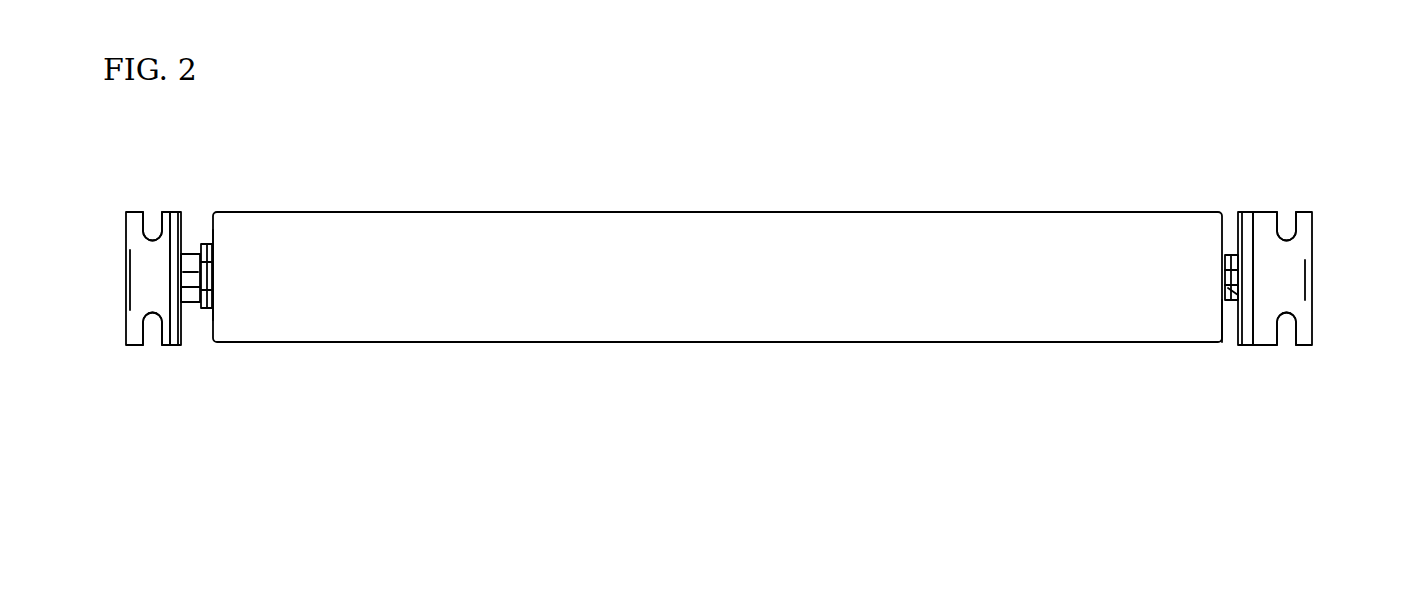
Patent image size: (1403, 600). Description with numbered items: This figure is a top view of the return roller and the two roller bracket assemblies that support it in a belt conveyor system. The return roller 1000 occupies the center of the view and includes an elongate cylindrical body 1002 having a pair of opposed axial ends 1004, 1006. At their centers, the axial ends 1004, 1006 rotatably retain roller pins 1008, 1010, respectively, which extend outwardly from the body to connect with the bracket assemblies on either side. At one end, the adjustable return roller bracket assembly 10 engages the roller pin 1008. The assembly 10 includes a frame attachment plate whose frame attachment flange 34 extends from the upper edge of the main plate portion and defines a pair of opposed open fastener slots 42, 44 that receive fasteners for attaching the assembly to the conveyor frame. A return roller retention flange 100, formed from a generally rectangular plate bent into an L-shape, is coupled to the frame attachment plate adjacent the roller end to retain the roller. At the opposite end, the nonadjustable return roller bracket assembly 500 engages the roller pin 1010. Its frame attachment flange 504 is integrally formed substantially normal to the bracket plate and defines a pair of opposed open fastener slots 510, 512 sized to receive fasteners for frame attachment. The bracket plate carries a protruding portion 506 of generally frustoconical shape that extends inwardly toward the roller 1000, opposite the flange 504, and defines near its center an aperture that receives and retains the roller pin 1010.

The adjustable return roller bracket assembly 10 is at (130, 207).
The frame attachment flange 34 is at (140, 270).
The open fastener slot 42 is at (153, 330).
The open fastener slot 44 is at (150, 222).
The return roller retention flange 100 is at (188, 287).
The return roller 1000 is at (723, 213).
The elongate cylindrical body 1002 is at (882, 318).
The axial end 1004 is at (215, 288).
The axial end 1006 is at (1222, 345).
The roller pin 1008 is at (217, 248).
The roller pin 1010 is at (1228, 250).
The nonadjustable return roller bracket assembly 500 is at (1315, 245).
The frame attachment flange 504 is at (1290, 295).
The protruding portion 506 is at (1230, 292).
The open fastener slot 510 is at (1285, 335).
The open fastener slot 512 is at (1282, 215).